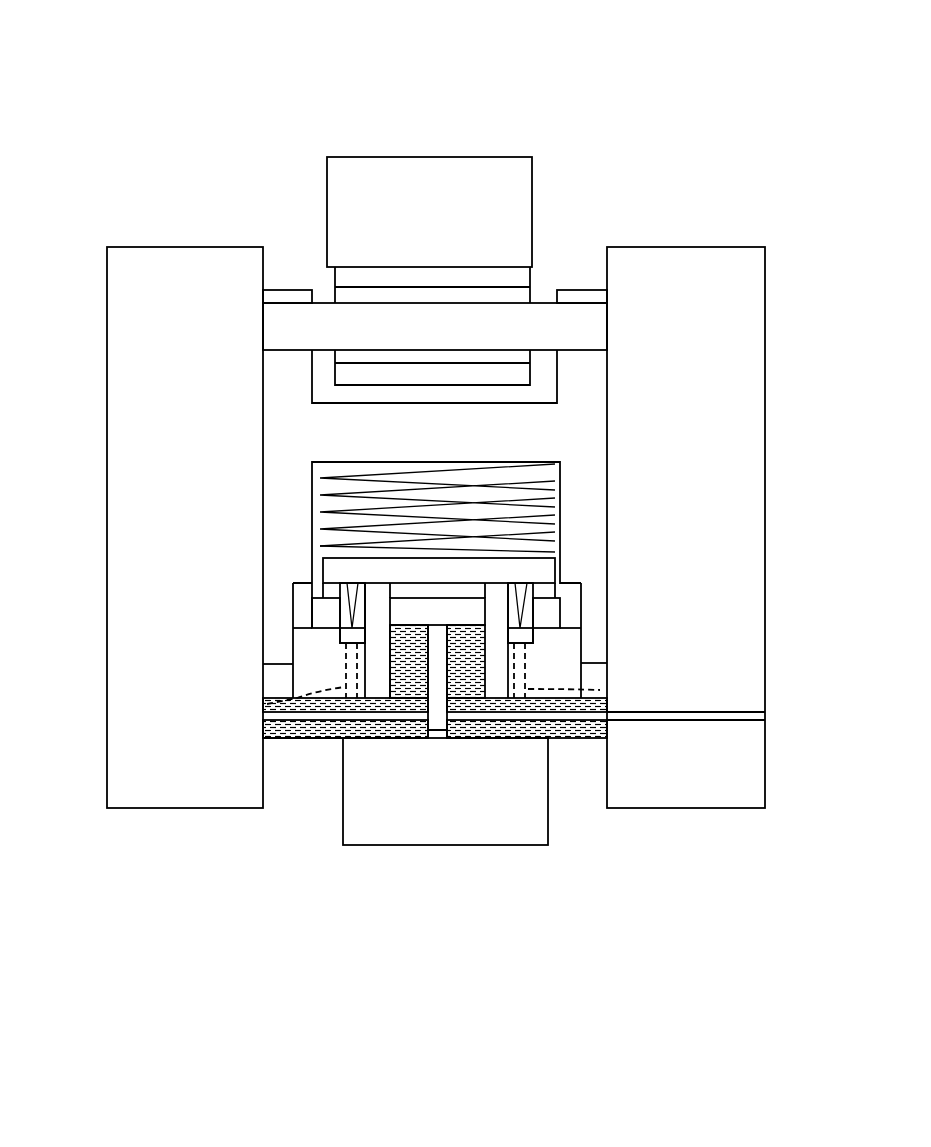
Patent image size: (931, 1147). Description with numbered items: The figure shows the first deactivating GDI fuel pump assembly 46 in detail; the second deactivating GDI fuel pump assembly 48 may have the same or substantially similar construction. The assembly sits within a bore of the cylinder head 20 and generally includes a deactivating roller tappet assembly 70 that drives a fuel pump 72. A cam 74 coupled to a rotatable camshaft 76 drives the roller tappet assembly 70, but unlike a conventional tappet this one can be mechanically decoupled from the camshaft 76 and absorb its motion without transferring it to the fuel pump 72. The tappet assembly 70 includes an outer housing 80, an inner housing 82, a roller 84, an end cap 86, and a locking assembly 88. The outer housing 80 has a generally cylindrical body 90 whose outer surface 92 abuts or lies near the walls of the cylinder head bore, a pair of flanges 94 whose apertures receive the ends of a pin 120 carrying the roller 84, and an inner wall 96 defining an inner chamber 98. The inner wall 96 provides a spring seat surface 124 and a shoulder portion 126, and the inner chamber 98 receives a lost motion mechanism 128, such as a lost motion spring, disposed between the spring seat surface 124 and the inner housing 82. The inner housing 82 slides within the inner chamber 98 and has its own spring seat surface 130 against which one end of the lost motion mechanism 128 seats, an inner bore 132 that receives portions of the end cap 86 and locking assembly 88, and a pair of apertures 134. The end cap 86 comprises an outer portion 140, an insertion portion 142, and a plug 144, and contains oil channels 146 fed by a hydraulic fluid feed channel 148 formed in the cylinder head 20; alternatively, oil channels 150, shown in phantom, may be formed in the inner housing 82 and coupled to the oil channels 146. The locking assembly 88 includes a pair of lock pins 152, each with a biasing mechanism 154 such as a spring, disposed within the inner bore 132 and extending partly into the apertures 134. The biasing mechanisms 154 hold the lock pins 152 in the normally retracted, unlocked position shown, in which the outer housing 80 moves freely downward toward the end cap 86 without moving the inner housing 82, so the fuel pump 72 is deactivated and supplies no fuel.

The cylinder head 20 is at (107, 412).
The first deactivating GDI fuel pump assembly 46 is at (435, 500).
The second deactivating GDI fuel pump assembly 48 is at (705, 75).
The deactivating roller tappet assembly 70 is at (245, 163).
The fuel pump 72 is at (445, 846).
The cam 74 is at (455, 257).
The rotatable camshaft 76 is at (484, 157).
The outer housing 80 is at (423, 626).
The inner housing 82 is at (575, 657).
The roller 84 is at (522, 281).
The end cap 86 is at (276, 742).
The locking assembly 88 is at (557, 567).
The cylindrical body 90 is at (595, 418).
The outer surface 92 is at (607, 444).
The flanges 94 is at (290, 288).
The inner wall 96 is at (469, 519).
The inner chamber 98 is at (300, 598).
The pin 120 is at (331, 318).
The spring seat surface 124 is at (358, 464).
The shoulder portion 126 is at (300, 583).
The lost motion mechanism 128 is at (463, 488).
The spring seat surface 130 is at (545, 537).
The inner bore 132 is at (391, 671).
The apertures 134 is at (441, 546).
The outer portion 140 is at (580, 731).
The insertion portion 142 is at (472, 687).
The plug 144 is at (440, 736).
The oil channels 146 is at (330, 717).
The hydraulic fluid feed channel 148 is at (687, 717).
The oil channels 150 is at (267, 704).
The lock pins 152 is at (338, 592).
The biasing mechanism 154 is at (375, 590).